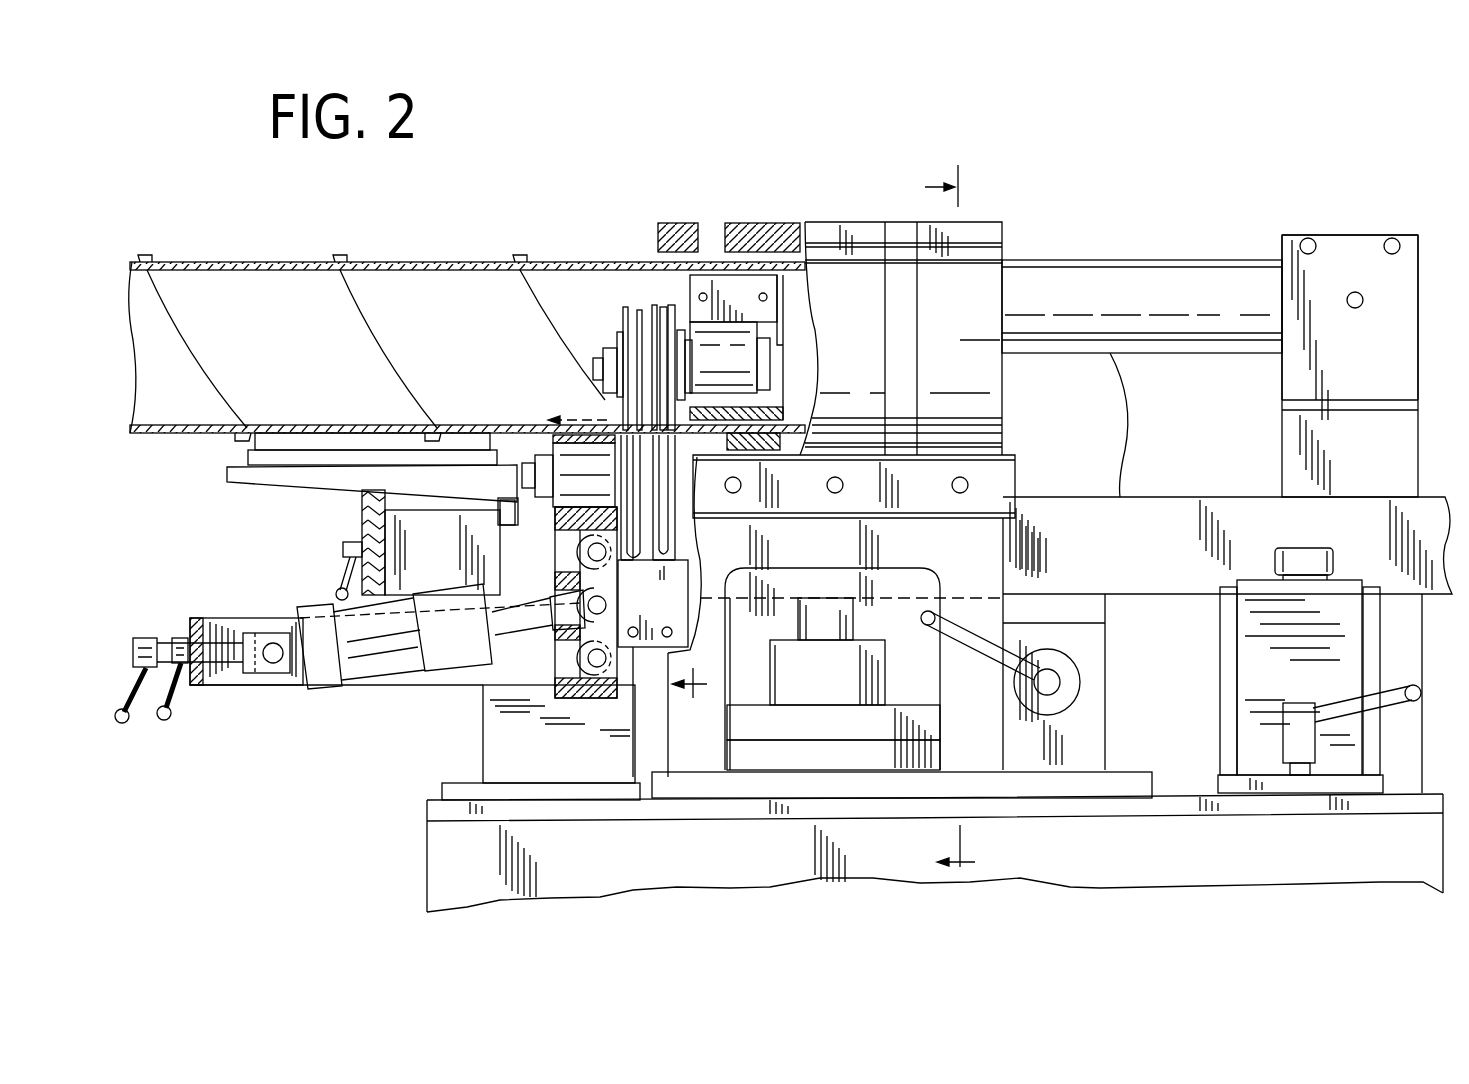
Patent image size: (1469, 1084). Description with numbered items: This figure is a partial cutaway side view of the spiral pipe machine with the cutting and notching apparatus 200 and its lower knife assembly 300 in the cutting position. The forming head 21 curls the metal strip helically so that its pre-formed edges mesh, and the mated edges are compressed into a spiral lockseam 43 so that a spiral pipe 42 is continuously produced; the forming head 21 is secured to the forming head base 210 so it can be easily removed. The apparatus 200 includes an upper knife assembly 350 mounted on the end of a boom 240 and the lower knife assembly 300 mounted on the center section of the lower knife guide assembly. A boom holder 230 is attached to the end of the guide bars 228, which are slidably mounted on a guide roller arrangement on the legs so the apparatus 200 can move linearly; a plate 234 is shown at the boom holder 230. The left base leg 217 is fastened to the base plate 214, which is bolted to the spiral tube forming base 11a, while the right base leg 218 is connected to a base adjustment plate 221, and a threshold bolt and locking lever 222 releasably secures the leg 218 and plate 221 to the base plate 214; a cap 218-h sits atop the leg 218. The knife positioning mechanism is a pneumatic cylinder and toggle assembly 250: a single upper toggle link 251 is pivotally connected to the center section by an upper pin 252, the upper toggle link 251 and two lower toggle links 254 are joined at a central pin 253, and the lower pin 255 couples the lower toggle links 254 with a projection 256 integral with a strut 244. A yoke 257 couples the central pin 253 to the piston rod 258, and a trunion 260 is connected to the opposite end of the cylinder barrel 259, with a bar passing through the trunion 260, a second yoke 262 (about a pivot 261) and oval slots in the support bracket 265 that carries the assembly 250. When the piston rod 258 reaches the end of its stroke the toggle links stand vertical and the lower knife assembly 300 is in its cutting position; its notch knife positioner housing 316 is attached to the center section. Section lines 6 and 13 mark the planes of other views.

The cutting and notching apparatus 200 is at (792, 546).
The spiral pipe 42 is at (456, 262).
The spiral lockseam 43 is at (527, 262).
The upper knife assembly 350 is at (612, 292).
The lower knife assembly 300 is at (605, 408).
The section line 6 is at (627, 557).
The section line 13 is at (939, 516).
The forming head 21 is at (822, 232).
The boom 240 is at (1133, 292).
The boom holder 230 is at (1372, 495).
The column plate 234 is at (1355, 255).
The guide bars 228 is at (1287, 510).
The forming head base 210 is at (978, 725).
The right base leg 218 is at (1291, 677).
The jack cap 218-h is at (1308, 565).
The threshold bolt and locking lever 222 is at (1410, 688).
The base adjustment plate 221 is at (1317, 783).
The base plate 214 is at (948, 855).
The spiral tube forming base 11a is at (1423, 879).
The left base leg 217 is at (500, 747).
The strut 244 is at (558, 631).
The projection 256 is at (580, 682).
The upper toggle link 251 is at (570, 578).
The lower toggle links 254 is at (588, 632).
The upper pin 252 is at (582, 550).
The central pin 253 is at (608, 609).
The lower pin 255 is at (582, 658).
The housing 316 is at (672, 583).
The cylinder and toggle assembly 250 is at (392, 653).
The support bracket 265 is at (235, 623).
The second yoke 262 is at (261, 633).
The pivot 261 is at (273, 660).
The trunion 260 is at (293, 633).
The cylinder barrel 259 is at (372, 647).
The piston rod 258 is at (508, 606).
The yoke 257 is at (610, 596).